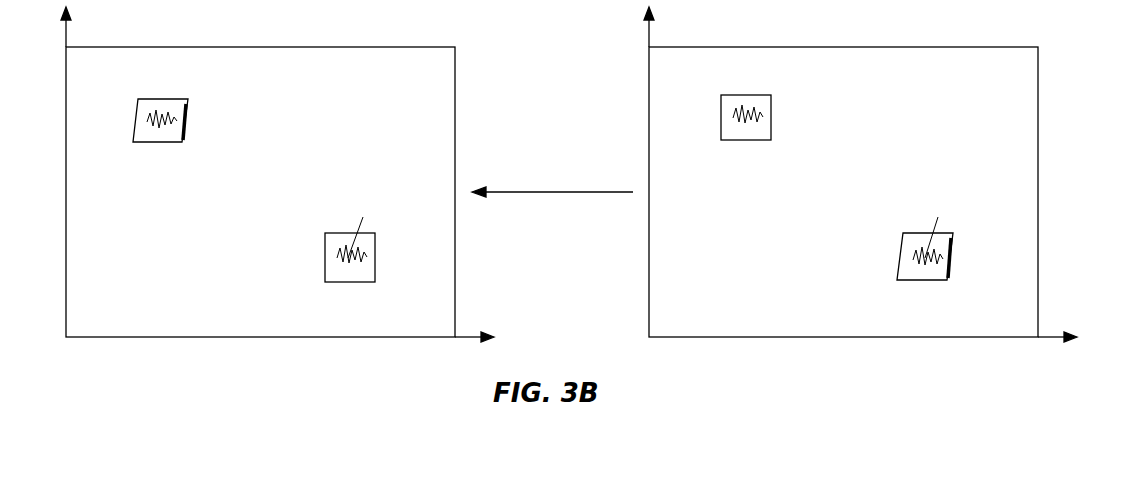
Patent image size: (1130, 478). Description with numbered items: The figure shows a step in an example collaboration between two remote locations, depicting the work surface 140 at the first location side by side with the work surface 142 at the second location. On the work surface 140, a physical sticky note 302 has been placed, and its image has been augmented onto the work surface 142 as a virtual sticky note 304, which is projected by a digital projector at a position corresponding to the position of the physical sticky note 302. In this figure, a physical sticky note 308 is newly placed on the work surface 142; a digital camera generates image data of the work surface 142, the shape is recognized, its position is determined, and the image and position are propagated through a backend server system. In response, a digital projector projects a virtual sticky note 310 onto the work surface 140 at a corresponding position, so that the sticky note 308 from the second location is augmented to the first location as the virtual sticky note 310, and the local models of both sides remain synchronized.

The work surface 140 is at (455, 95).
The work surface 142 is at (1038, 110).
The physical sticky note 302 is at (156, 142).
The virtual sticky note 304 is at (746, 140).
The physical sticky note 308 is at (922, 280).
The virtual sticky note 310 is at (350, 282).